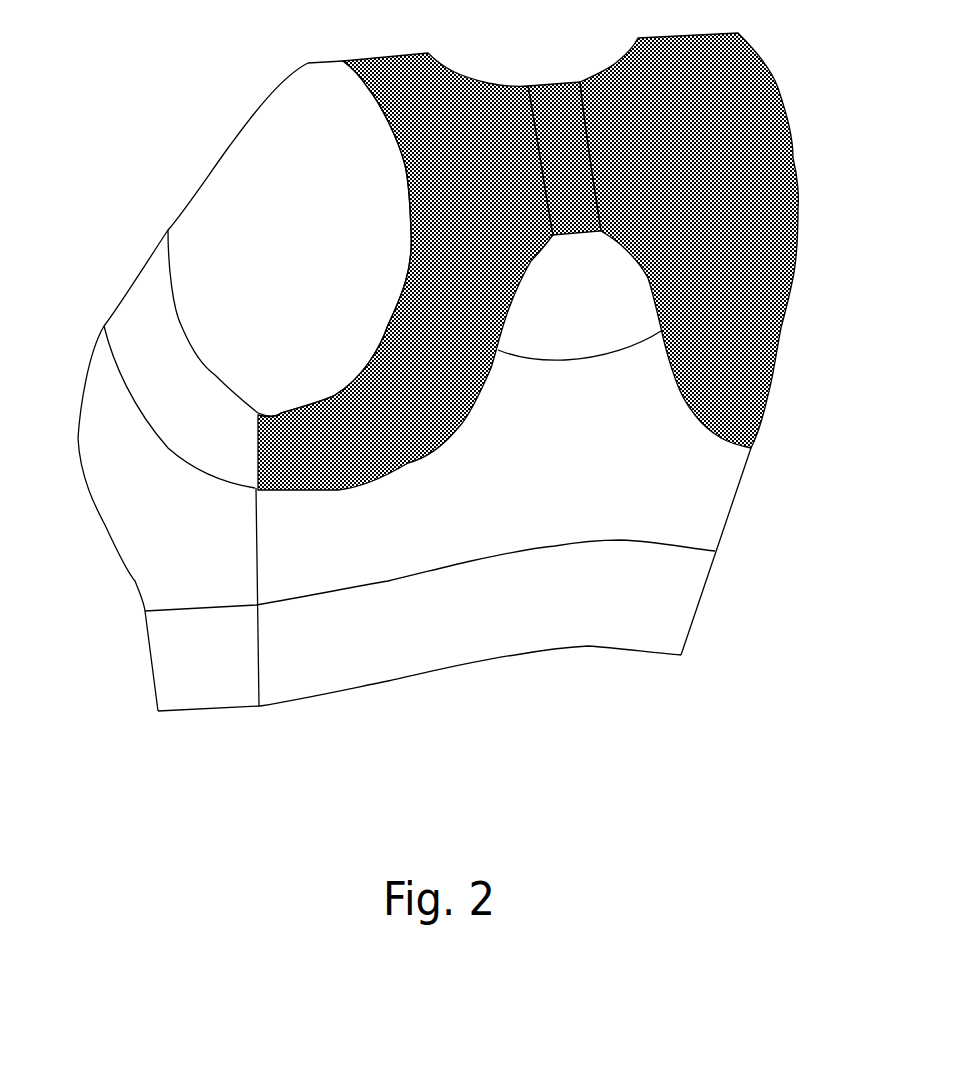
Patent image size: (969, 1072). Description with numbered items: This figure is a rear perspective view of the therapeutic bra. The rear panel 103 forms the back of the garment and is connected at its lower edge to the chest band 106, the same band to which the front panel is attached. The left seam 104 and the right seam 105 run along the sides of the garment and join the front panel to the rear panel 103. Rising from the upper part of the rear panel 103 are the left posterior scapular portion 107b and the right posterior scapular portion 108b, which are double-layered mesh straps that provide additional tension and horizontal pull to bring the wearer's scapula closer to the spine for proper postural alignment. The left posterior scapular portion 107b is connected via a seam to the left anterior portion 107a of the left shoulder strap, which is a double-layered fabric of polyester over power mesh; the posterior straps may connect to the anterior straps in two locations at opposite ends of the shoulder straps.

The rear panel 103 is at (487, 507).
The left seam 104 is at (247, 508).
The right seam 105 is at (723, 497).
The chest band 106 is at (310, 677).
The left anterior portion 107a is at (128, 312).
The left posterior scapular portion 107b is at (360, 378).
The right posterior scapular portion 108b is at (750, 147).